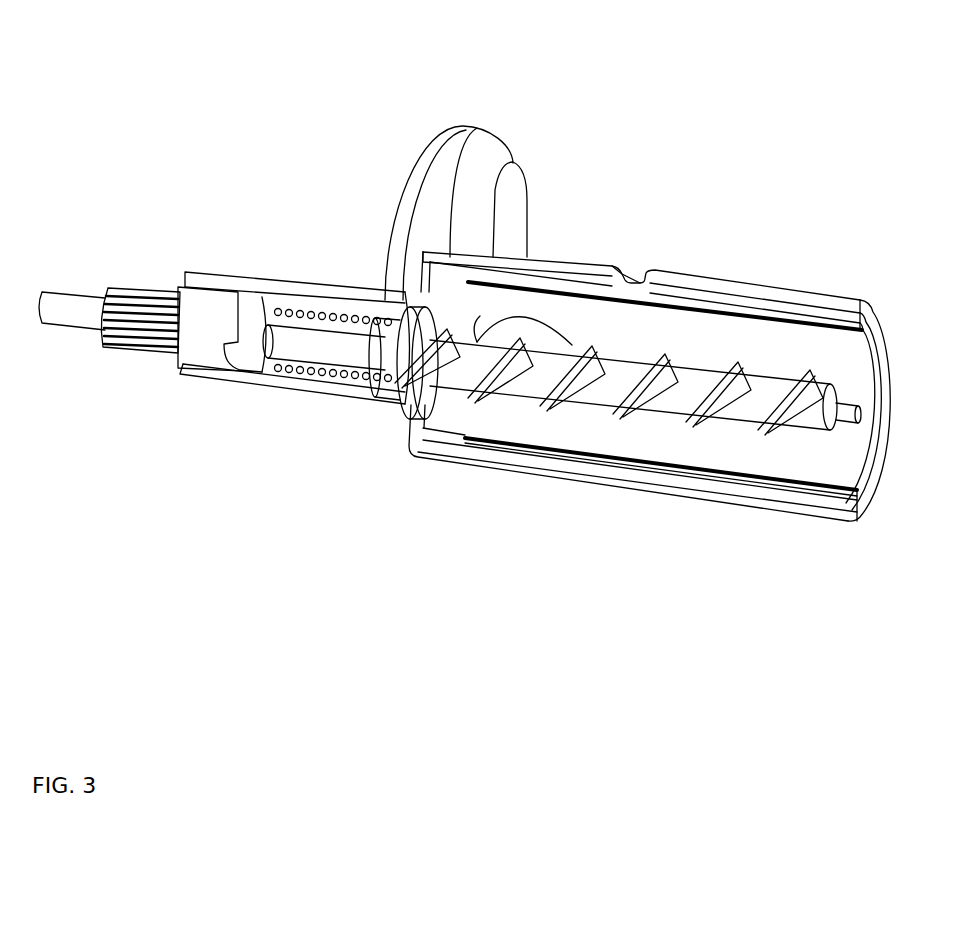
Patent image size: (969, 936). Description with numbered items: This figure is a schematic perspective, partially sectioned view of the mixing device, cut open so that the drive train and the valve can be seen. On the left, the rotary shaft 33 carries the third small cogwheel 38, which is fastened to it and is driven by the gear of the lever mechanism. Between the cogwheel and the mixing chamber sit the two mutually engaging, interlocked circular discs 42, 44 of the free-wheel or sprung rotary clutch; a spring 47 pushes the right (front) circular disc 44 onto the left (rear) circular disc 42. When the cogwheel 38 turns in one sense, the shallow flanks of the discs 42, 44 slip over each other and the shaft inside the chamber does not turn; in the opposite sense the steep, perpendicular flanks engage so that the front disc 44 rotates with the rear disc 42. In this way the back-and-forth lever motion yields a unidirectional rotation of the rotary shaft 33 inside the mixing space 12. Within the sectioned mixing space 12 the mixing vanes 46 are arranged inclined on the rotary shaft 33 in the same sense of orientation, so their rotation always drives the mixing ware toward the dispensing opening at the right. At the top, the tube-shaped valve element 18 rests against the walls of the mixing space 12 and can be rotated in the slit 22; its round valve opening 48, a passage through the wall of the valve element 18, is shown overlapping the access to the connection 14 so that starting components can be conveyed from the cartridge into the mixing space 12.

The mixing space 12 is at (777, 302).
The connection 14 is at (468, 187).
The valve element 18 is at (677, 303).
The slit 22 is at (633, 278).
The rotary shaft 33 is at (77, 305).
The third small cogwheel 38 is at (153, 302).
The left (rear) circular disc 42 is at (206, 318).
The right (front) circular disc 44 is at (249, 325).
The mixing vanes 46 is at (727, 392).
The spring 47 is at (323, 314).
The valve opening 48 is at (537, 330).